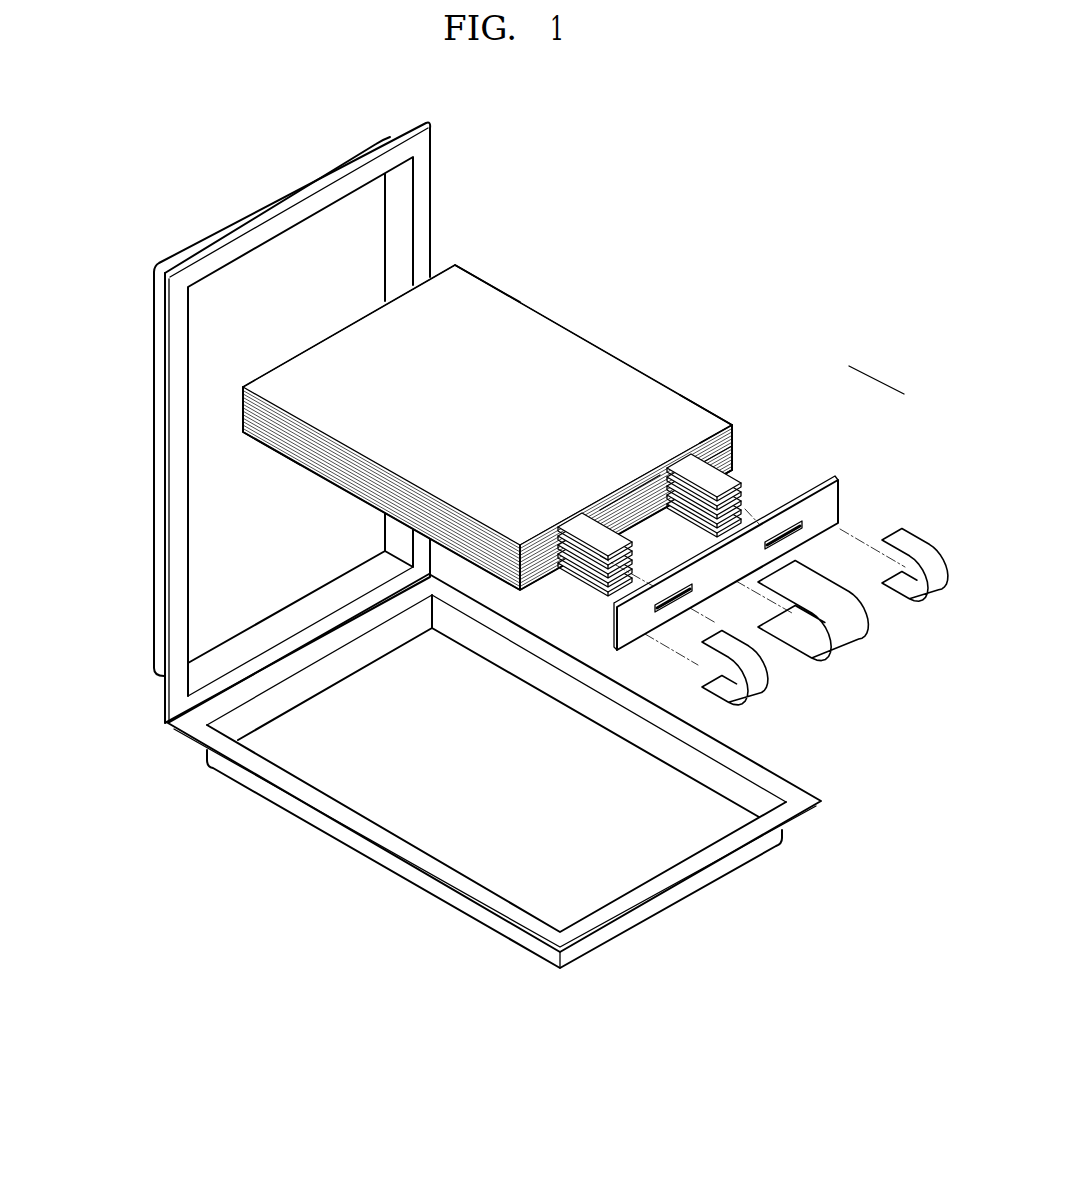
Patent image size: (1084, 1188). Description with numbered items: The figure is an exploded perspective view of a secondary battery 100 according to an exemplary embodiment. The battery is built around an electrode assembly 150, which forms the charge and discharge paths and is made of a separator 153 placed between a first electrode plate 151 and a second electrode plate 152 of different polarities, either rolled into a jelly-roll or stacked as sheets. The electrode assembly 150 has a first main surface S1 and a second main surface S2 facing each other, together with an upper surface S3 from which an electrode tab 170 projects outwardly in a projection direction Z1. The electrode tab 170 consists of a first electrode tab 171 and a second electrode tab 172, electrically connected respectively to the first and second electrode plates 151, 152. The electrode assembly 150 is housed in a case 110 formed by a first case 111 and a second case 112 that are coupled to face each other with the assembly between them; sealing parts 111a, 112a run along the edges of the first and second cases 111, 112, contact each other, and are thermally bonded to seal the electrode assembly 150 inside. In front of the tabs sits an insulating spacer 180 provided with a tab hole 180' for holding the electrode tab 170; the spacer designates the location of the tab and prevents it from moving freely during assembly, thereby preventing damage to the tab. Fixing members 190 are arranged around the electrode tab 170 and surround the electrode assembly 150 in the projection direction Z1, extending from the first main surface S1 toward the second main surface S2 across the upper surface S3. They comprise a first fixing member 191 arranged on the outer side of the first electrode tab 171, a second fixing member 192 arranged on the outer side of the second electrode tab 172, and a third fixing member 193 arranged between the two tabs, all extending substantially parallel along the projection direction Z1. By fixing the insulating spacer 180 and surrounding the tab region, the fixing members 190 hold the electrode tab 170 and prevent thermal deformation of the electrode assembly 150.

The secondary battery 100 is at (741, 969).
The case 110 is at (205, 853).
The first case 111 is at (157, 612).
The sealing part 111a is at (178, 503).
The second case 112 is at (258, 788).
The sealing part 112a is at (372, 835).
The electrode assembly 150 is at (580, 309).
The first electrode plate 151 is at (738, 419).
The second electrode plate 152 is at (741, 456).
The separator 153 is at (738, 438).
The first main surface S1 is at (487, 297).
The second main surface S2 is at (296, 464).
The upper surface S3 is at (638, 492).
The electrode tab 170 is at (577, 590).
The first electrode tab 171 is at (742, 488).
The second electrode tab 172 is at (634, 540).
The insulating spacer 180 is at (764, 533).
The tab hole 180' is at (785, 538).
The fixing member 190 is at (950, 675).
The first fixing member 191 is at (933, 601).
The second fixing member 192 is at (762, 692).
The third fixing member 193 is at (846, 637).
The projection direction Z1 is at (904, 394).